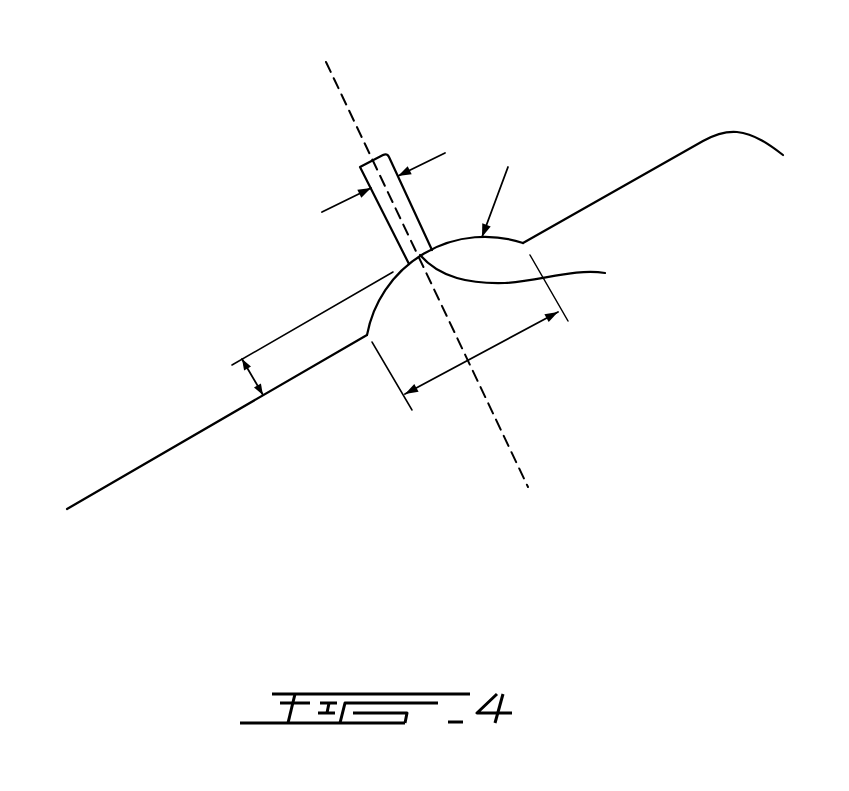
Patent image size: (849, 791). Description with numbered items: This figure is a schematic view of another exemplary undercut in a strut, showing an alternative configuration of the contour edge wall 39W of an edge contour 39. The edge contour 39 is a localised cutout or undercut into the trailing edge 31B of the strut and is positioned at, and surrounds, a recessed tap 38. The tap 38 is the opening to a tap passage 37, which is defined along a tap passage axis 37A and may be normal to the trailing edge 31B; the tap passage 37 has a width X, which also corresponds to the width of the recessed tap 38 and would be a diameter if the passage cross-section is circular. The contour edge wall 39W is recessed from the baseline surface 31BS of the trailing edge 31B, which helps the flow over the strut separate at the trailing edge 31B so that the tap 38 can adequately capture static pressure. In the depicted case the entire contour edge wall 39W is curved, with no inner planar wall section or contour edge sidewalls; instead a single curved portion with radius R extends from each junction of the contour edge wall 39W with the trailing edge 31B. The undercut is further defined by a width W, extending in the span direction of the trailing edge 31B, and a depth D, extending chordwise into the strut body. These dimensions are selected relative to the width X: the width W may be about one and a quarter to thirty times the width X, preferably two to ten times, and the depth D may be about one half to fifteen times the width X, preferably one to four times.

The trailing edge 31B is at (128, 497).
The baseline surface 31BS is at (623, 190).
The tap passage 37 is at (367, 173).
The tap passage axis 37A is at (417, 257).
The tap 38 is at (605, 273).
The edge contour 39 is at (388, 320).
The contour edge wall 39W is at (517, 225).
The width of the tap passage X is at (387, 166).
The radius R is at (502, 187).
The width W is at (470, 332).
The depth D is at (305, 338).